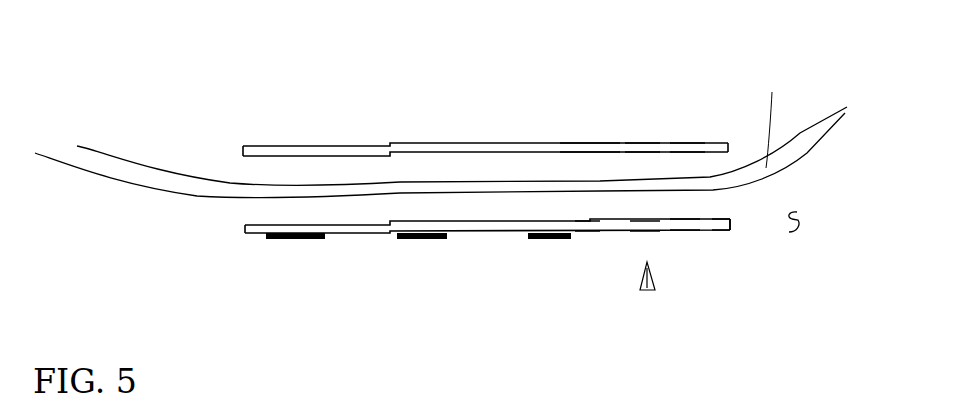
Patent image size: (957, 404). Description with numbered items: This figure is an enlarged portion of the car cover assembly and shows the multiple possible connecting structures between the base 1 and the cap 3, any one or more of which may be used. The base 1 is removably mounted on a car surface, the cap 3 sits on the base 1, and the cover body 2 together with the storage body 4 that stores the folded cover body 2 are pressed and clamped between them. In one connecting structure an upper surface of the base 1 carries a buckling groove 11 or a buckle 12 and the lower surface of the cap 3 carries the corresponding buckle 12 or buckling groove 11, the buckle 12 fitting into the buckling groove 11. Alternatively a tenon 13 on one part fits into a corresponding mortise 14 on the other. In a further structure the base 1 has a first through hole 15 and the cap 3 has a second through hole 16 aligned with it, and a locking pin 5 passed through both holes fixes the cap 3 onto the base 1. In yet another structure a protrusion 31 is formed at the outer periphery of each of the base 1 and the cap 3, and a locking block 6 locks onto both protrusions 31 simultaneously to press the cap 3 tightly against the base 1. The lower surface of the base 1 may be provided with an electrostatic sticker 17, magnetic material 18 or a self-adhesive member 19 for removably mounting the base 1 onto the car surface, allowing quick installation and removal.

The base 1 is at (728, 223).
The cover body 2 is at (710, 177).
The cap 3 is at (600, 148).
The storage body 4 is at (737, 190).
The locking pin 5 is at (647, 275).
The locking block 6 is at (793, 217).
The buckling groove 11 is at (687, 148).
The buckle 12 is at (683, 220).
The tenon 13 is at (588, 218).
The mortise 14 is at (590, 148).
The first through hole 15 is at (645, 227).
The second through hole 16 is at (642, 148).
The electrostatic sticker 17 is at (293, 239).
The magnetic material 18 is at (422, 239).
The self-adhesive member 19 is at (542, 237).
The protrusion 31 is at (727, 230).